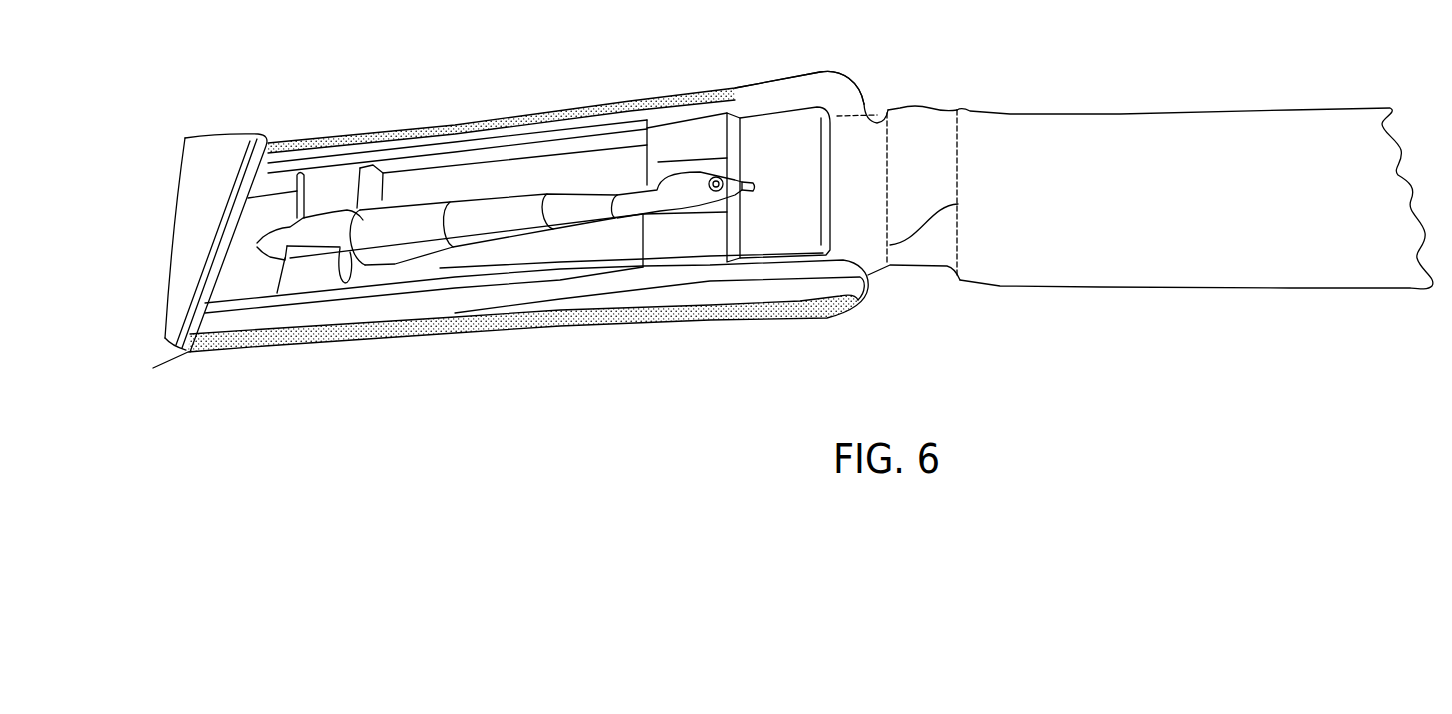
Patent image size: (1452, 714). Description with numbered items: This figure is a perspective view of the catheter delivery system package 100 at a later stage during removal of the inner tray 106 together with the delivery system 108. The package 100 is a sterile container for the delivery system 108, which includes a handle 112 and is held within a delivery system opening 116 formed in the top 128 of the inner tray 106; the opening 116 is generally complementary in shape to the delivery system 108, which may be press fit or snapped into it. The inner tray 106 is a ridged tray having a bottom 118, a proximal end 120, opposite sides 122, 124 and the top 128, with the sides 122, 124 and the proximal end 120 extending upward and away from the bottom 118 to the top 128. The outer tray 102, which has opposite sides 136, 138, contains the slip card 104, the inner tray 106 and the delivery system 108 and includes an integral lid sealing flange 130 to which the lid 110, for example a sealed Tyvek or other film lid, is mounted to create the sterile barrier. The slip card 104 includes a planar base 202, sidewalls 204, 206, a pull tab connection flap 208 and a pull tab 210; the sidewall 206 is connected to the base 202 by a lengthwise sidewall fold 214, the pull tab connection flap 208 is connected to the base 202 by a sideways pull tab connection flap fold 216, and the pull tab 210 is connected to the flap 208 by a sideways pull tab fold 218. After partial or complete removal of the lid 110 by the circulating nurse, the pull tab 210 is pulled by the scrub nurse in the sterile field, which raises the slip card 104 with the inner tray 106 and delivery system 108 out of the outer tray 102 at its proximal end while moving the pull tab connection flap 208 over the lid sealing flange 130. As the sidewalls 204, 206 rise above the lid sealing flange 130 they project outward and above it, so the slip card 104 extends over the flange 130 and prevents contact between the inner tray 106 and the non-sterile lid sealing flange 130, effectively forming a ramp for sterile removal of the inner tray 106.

The catheter delivery system package 100 is at (539, 376).
The outer tray 102 is at (401, 123).
The slip card 104 is at (1070, 134).
The inner tray 106 is at (700, 132).
The delivery system 108 is at (543, 198).
The lid 110 is at (234, 150).
The handle 112 is at (603, 197).
The delivery system opening 116 is at (436, 264).
The bottom 118 is at (640, 280).
The proximal end 120 is at (817, 117).
The side 122 is at (467, 301).
The side 124 is at (478, 140).
The top 128 is at (728, 112).
The lid sealing flange 130 is at (722, 312).
The side 136 is at (290, 378).
The side 138 is at (334, 129).
The base 202 is at (881, 173).
The sidewall 204 is at (818, 284).
The sidewall 206 is at (864, 103).
The pull tab connection flap 208 is at (948, 197).
The pull tab 210 is at (1208, 207).
The lengthwise sidewall fold 214 is at (880, 127).
The sideways pull tab connection flap fold 216 is at (958, 204).
The sideways pull tab fold 218 is at (960, 223).